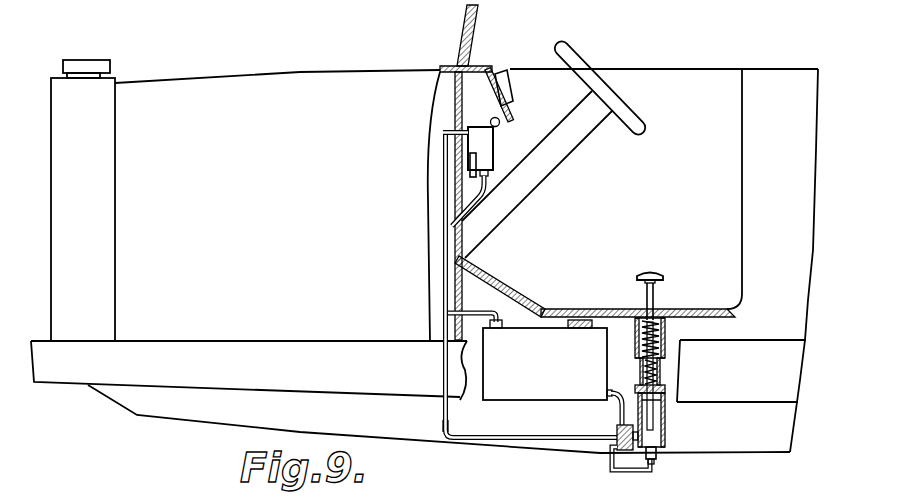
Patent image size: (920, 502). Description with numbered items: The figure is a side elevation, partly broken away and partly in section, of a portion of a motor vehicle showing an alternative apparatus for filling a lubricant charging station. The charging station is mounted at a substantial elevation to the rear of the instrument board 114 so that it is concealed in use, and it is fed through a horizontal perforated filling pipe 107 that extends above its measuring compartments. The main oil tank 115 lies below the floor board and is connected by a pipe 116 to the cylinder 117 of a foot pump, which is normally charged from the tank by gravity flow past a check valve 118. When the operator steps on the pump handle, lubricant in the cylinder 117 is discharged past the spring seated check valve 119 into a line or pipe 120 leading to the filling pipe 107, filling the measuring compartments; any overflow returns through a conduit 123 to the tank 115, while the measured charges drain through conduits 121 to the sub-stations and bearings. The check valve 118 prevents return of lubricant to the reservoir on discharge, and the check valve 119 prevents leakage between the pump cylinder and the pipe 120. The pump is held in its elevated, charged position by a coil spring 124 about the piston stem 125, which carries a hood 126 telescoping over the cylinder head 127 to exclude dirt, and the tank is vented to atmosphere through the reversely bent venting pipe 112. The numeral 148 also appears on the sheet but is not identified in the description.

The filling pipe 107 is at (467, 127).
The venting pipe 112 is at (498, 126).
The instrument board 114 is at (509, 107).
The main oil tank 115 is at (525, 385).
The pipe 116 is at (609, 467).
The cylinder 117 is at (657, 423).
The check valve 118 is at (656, 455).
The spring seated check valve 119 is at (616, 428).
The pipe 120 is at (443, 428).
The conduits 121 is at (472, 174).
The conduit 123 is at (460, 255).
The coil spring 124 is at (666, 340).
The piston stem 125 is at (663, 368).
The hood 126 is at (660, 314).
The cylinder head 127 is at (643, 373).
The frame 148 is at (439, 443).